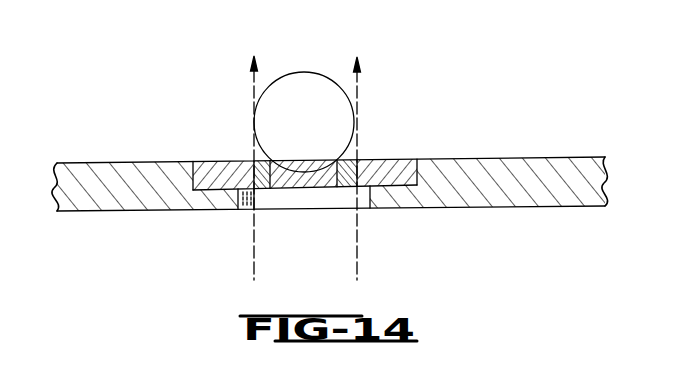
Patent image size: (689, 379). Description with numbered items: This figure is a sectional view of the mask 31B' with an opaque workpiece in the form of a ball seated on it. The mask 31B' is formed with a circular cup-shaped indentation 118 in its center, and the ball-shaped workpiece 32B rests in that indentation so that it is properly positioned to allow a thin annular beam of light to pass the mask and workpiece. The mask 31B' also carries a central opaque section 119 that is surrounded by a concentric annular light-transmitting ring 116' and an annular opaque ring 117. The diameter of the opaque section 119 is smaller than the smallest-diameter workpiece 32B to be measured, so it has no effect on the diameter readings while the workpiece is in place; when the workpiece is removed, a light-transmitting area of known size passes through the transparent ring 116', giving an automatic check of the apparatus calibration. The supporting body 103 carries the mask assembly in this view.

The plate 103 is at (72, 163).
The mask 31B' is at (280, 148).
The ball-shaped workpiece 32B is at (306, 84).
The opaque ring 117 is at (205, 184).
The indentation 118 is at (320, 170).
The light-transmitting ring 116' is at (278, 226).
The central opaque section 119 is at (321, 191).